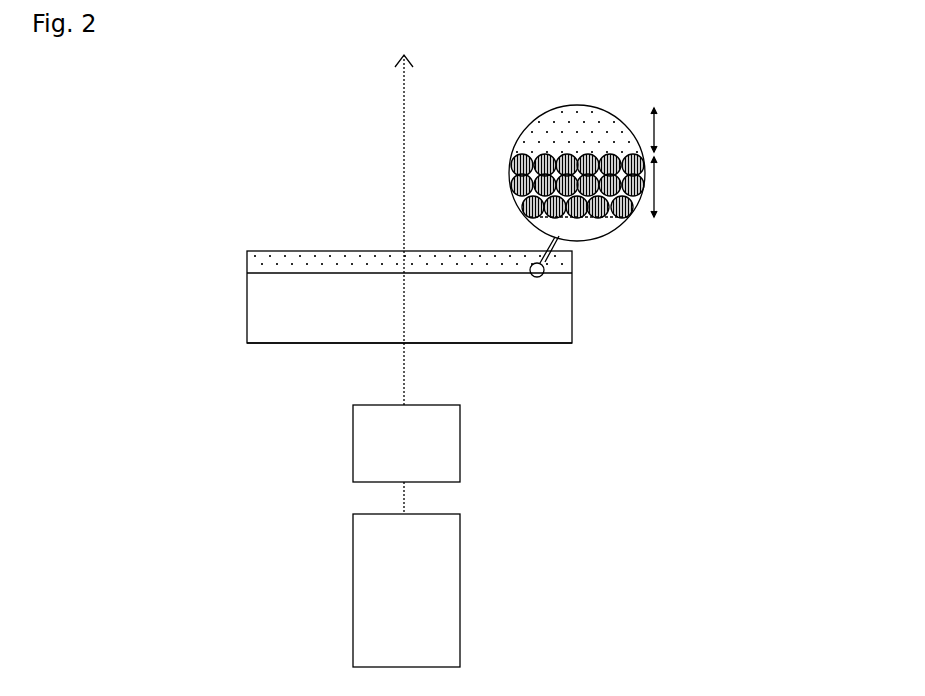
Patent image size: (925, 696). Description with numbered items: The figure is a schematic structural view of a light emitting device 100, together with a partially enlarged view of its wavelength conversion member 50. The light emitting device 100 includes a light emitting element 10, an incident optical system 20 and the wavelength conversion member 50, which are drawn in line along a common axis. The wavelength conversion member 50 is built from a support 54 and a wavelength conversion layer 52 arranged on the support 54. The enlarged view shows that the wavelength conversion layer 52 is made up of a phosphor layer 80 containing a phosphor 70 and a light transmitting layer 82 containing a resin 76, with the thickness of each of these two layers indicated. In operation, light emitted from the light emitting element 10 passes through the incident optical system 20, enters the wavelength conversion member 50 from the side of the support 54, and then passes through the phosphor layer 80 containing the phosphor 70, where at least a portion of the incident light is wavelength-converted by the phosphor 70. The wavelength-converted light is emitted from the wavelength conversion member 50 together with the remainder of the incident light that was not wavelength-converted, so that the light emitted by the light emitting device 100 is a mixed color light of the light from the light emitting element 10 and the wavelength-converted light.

The light emitting device 100 is at (257, 667).
The light emitting element 10 is at (460, 632).
The incident optical system 20 is at (460, 463).
The wavelength conversion member 50 is at (118, 257).
The wavelength conversion layer 52 is at (262, 259).
The support 54 is at (262, 294).
The phosphor 70 is at (518, 168).
The resin 76 is at (537, 132).
The phosphor layer 80 is at (683, 187).
The light transmitting layer 82 is at (683, 130).